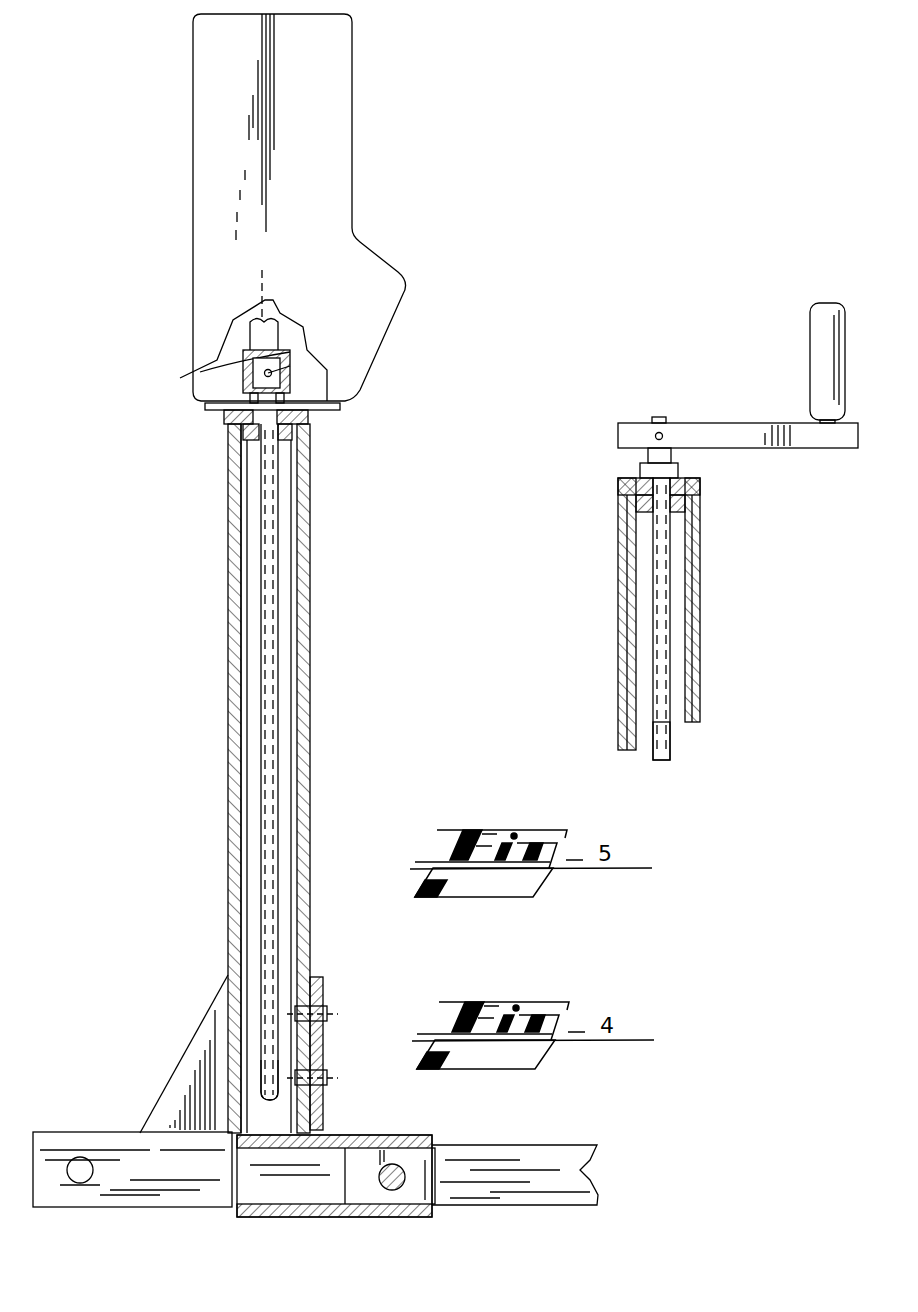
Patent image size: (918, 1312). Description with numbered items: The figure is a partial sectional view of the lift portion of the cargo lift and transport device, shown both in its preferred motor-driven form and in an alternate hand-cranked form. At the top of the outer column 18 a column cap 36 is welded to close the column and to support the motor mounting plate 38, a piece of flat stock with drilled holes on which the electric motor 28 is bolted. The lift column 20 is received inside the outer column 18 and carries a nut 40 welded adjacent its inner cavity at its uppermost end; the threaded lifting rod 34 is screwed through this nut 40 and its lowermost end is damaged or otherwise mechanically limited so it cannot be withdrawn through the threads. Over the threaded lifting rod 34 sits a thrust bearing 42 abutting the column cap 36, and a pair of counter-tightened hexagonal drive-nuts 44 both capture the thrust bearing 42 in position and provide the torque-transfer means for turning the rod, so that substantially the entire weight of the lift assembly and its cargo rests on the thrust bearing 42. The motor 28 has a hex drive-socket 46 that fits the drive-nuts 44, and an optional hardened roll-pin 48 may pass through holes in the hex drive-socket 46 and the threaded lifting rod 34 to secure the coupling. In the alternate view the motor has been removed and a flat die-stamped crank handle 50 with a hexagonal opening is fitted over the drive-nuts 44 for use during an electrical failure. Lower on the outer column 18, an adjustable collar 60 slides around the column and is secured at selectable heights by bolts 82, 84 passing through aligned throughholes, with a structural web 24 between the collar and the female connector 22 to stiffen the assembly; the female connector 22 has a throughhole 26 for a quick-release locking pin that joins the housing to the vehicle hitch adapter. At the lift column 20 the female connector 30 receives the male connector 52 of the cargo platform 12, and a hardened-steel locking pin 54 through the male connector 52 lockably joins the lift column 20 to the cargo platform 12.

In FIG. 4, the cargo platform 12 is at (557, 1153).
In FIG. 4, the outer column 18 is at (303, 556).
In FIG. 5, the outer column 18 is at (700, 623).
In FIG. 4, the lift column 20 is at (295, 632).
In FIG. 5, the lift column 20 is at (690, 680).
In FIG. 4, the female connector 22 is at (96, 1140).
In FIG. 4, the structural web 24 is at (215, 1015).
In FIG. 4, the throughhole 26 is at (75, 1181).
In FIG. 4, the motor 28 is at (330, 152).
In FIG. 4, the female connector 30 is at (395, 1135).
In FIG. 4, the threaded lifting rod 34 is at (272, 1062).
In FIG. 5, the threaded lifting rod 34 is at (680, 748).
In FIG. 4, the column cap 36 is at (225, 418).
In FIG. 5, the column cap 36 is at (700, 482).
In FIG. 4, the motor mounting plate 38 is at (212, 412).
In FIG. 4, the nut 40 is at (235, 482).
In FIG. 5, the nut 40 is at (672, 515).
In FIG. 4, the thrust bearing 42 is at (300, 438).
In FIG. 5, the thrust bearing 42 is at (646, 482).
In FIG. 4, the hexagonal drive-nuts 44 is at (243, 368).
In FIG. 5, the hexagonal drive-nuts 44 is at (678, 467).
In FIG. 4, the hex drive-socket 46 is at (288, 346).
In FIG. 4, the roll-pin 48 is at (300, 362).
In FIG. 5, the roll-pin 48 is at (663, 436).
In FIG. 5, the crank handle 50 is at (745, 397).
In FIG. 4, the male connector 52 is at (443, 1158).
In FIG. 4, the locking pin 54 is at (390, 1190).
In FIG. 4, the adjustable collar 60 is at (322, 977).
In FIG. 4, the bolts 82 is at (327, 1014).
In FIG. 4, the bolts 84 is at (327, 1062).